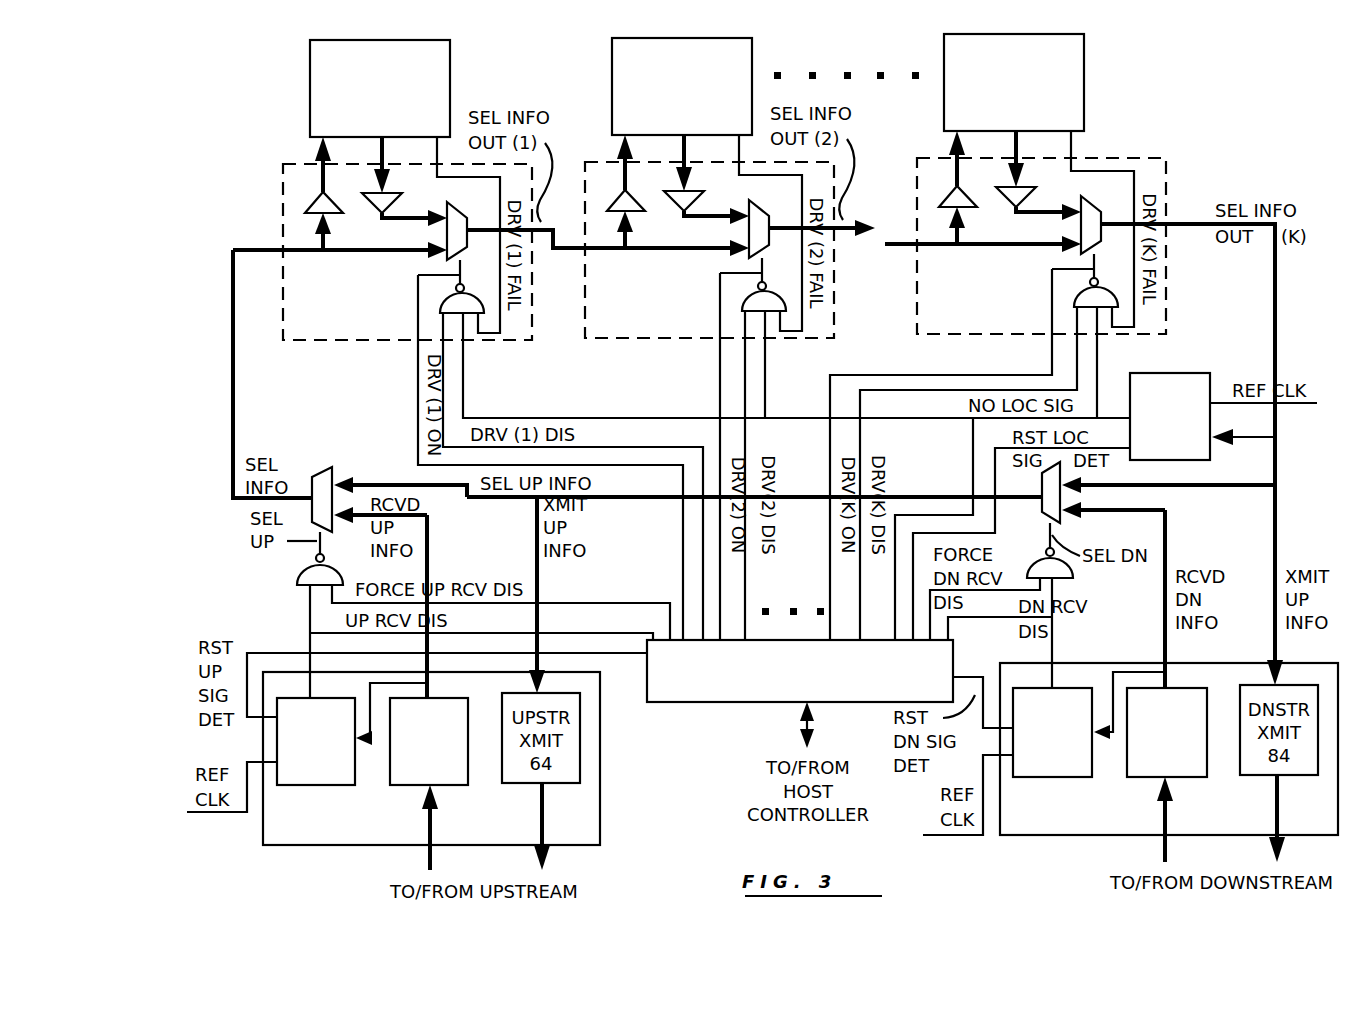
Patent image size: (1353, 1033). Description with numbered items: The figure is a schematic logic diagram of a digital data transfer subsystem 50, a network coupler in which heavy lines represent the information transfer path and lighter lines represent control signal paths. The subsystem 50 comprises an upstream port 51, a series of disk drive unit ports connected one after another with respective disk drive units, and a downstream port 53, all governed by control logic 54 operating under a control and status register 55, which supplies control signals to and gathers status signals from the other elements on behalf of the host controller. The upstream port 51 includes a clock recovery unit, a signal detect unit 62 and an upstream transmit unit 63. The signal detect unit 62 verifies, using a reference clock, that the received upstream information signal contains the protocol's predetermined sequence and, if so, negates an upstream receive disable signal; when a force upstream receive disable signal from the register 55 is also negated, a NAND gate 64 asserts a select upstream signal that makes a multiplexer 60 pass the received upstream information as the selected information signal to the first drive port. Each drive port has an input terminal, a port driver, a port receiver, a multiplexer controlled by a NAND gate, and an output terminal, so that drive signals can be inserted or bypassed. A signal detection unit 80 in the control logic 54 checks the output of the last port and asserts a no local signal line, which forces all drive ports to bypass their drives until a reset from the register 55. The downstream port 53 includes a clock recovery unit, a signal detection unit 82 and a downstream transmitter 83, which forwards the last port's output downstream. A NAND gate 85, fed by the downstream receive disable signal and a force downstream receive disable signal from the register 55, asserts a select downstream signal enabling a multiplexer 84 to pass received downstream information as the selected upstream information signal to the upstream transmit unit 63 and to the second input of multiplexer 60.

The digital data transfer subsystem 50 is at (255, 146).
The control logic 54 is at (1202, 315).
The multiplexer 60 is at (320, 466).
The NAND gate 64 is at (298, 566).
The signal detect unit 62 is at (316, 741).
The upstream transmit unit 63 is at (429, 741).
The upstream port 51 is at (431, 758).
The control and status register 55 is at (800, 671).
The signal detection unit 80 is at (1170, 416).
The multiplexer 84 is at (1062, 520).
The NAND gate 85 is at (1073, 570).
The signal detection unit 82 is at (1052, 732).
The downstream transmitter 83 is at (1167, 732).
The downstream port 53 is at (1169, 749).